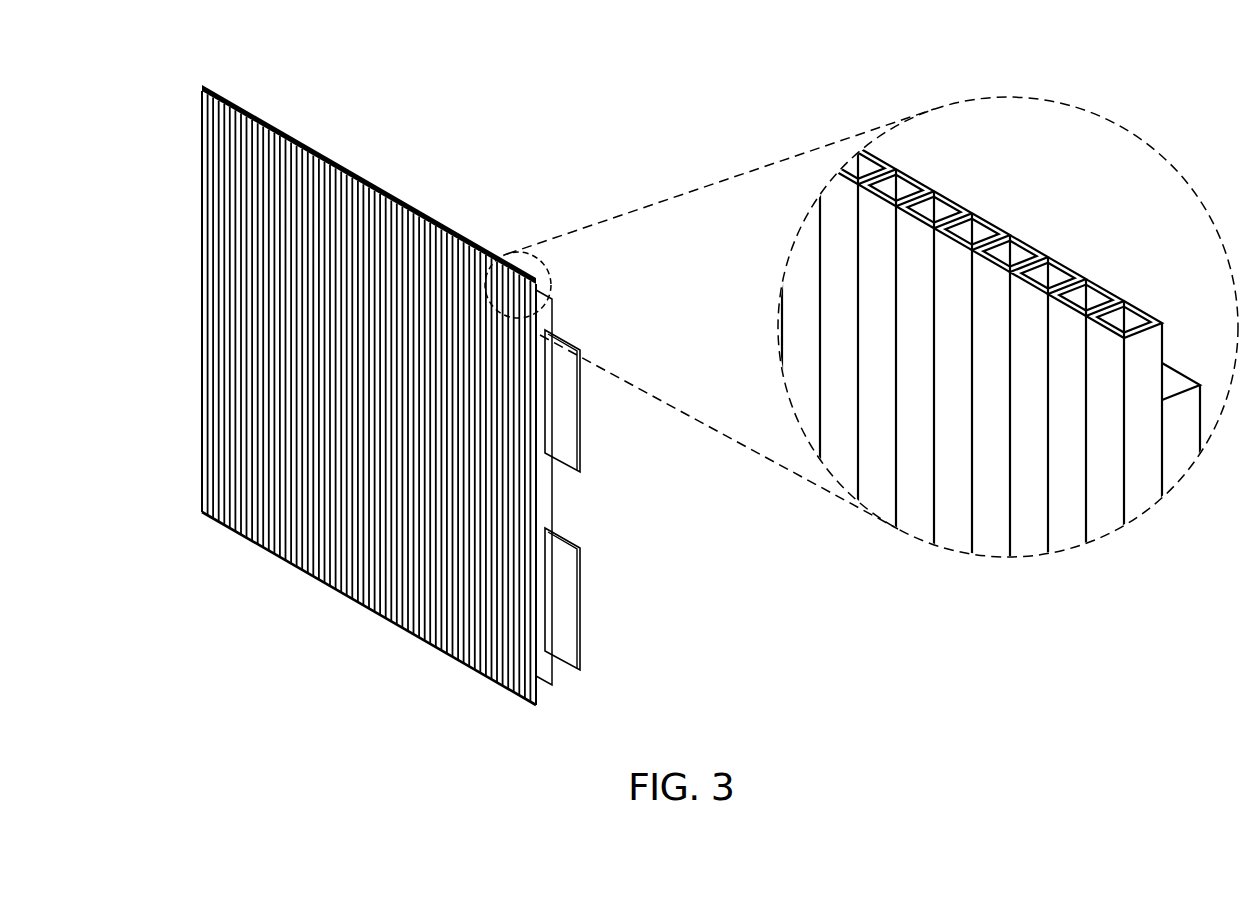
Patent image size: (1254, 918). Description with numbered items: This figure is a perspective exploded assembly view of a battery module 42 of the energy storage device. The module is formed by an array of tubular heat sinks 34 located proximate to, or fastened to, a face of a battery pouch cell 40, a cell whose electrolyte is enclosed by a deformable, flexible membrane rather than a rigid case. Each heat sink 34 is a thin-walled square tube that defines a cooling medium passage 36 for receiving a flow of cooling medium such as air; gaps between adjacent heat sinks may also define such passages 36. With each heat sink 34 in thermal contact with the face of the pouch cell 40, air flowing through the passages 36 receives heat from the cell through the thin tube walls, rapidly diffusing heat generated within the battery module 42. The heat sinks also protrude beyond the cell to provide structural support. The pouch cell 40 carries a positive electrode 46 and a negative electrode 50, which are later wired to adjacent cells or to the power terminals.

The tubular heat sink 34 is at (204, 93).
The cooling medium passage 36 is at (944, 207).
The battery pouch cell 40 is at (546, 291).
The battery module 42 is at (450, 208).
The positive electrode 46 is at (558, 408).
The negative electrode 50 is at (562, 667).